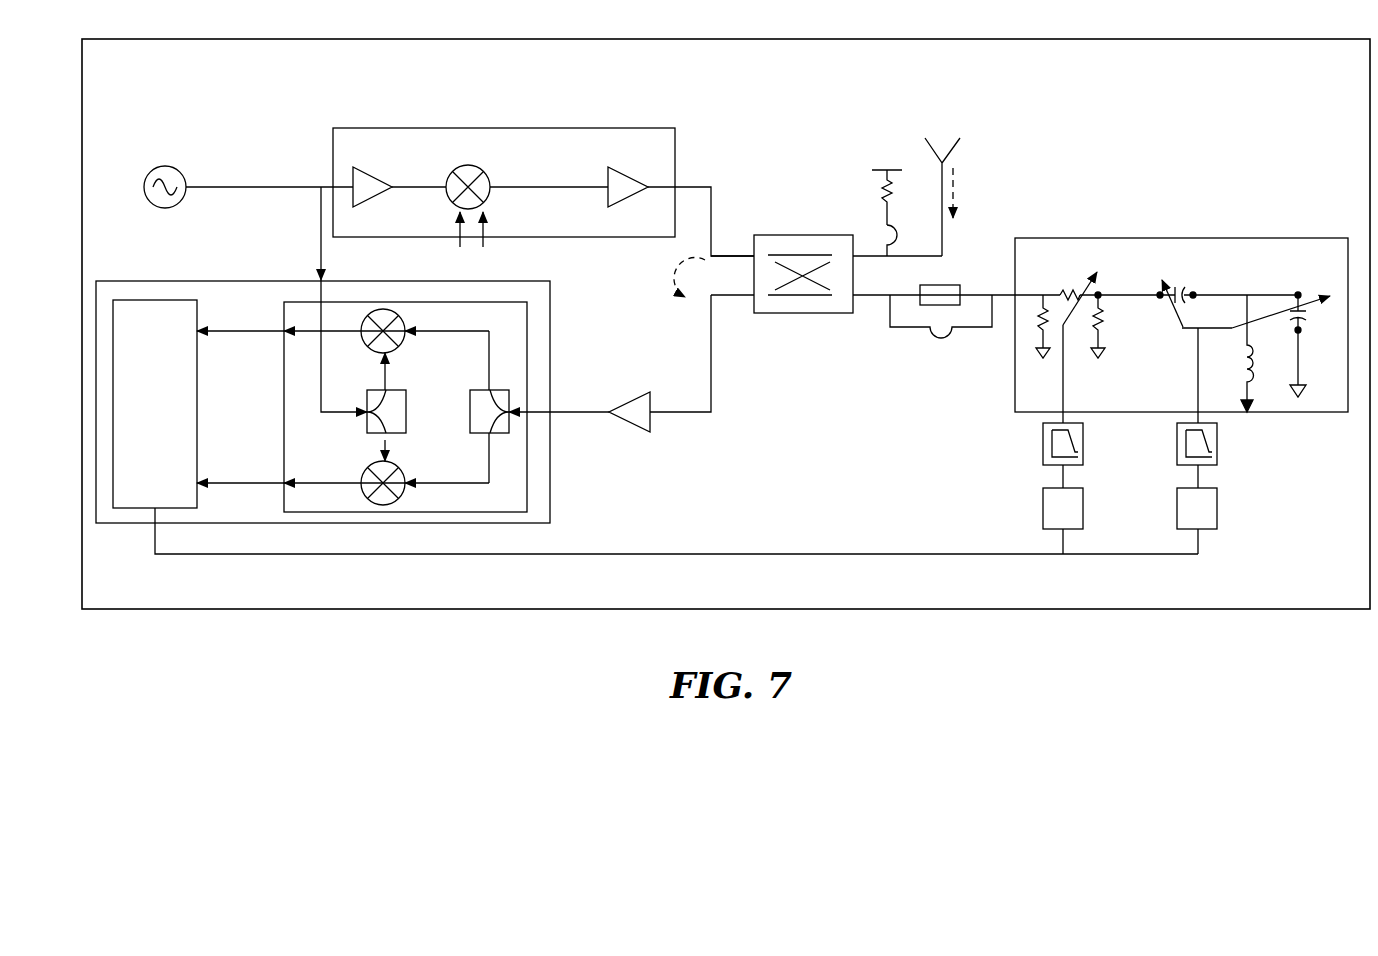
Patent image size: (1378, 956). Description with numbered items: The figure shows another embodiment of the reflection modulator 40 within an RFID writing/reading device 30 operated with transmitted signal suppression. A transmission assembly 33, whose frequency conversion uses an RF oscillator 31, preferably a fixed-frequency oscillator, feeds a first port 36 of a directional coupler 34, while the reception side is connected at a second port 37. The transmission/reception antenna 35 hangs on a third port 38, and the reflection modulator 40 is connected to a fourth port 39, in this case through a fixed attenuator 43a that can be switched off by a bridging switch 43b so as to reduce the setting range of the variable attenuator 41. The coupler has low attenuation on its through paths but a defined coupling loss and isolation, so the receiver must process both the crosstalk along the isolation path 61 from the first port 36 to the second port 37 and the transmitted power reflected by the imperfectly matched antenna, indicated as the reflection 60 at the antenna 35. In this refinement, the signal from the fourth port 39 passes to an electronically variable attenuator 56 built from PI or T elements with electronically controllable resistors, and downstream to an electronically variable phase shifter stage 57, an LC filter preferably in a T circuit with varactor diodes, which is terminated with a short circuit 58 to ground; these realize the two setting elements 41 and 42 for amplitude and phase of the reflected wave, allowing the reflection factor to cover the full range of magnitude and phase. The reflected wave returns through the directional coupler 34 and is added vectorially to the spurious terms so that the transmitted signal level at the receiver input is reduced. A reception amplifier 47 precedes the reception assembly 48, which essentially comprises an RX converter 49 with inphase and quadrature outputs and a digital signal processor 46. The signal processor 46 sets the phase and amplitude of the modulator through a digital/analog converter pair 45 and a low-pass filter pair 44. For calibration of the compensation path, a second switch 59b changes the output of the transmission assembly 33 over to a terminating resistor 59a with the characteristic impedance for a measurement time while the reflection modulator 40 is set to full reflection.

The RFID writing/reading device 30 is at (726, 324).
The RF oscillator 31 is at (248, 214).
The transmission assembly 33 is at (594, 127).
The directional coupler 34 is at (803, 314).
The transmission/reception antenna 35 is at (942, 187).
The first port 36 is at (732, 245).
The second port 37 is at (732, 304).
The third port 38 is at (897, 245).
The fourth port 39 is at (934, 304).
The reflection modulator 40 is at (1181, 313).
The variable attenuator 41 is at (1062, 287).
The setting element for the phase rotation of the reflected signals 42 is at (1225, 286).
The fixed attenuator 43a is at (940, 284).
The bridging switch 43b is at (941, 330).
The low-pass filter 44 is at (1043, 445).
The digital/analog converter 45 is at (1043, 503).
The digital signal processor 46 is at (155, 404).
The reception amplifier 47 is at (610, 363).
The reception assembly 48 is at (550, 472).
The RX converter with I/Q outputs 49 is at (362, 396).
The electronically variable attenuator 56 is at (1080, 298).
The electronically variable phase shifter 57 is at (1246, 304).
The radio-frequency short circuit 58 is at (1304, 392).
The terminating resistor 59a is at (900, 197).
The second switch 59b is at (909, 240).
The reflection antenna 60 is at (969, 193).
The isolation between transmitter and receiver 61 is at (693, 277).